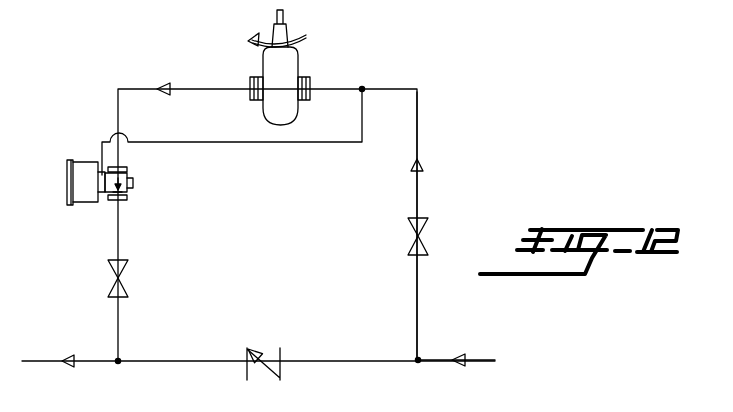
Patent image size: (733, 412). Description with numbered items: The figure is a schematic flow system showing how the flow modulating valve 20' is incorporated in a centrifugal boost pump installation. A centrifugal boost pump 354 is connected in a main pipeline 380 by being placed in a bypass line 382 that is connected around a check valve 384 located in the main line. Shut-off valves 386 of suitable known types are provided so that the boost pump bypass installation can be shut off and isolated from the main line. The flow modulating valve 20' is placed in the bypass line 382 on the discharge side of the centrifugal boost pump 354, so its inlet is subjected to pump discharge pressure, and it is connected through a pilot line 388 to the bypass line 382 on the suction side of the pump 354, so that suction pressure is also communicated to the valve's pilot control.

The flow modulating valve 20' is at (94, 163).
The centrifugal boost pump 354 is at (293, 65).
The main pipeline 380 is at (440, 361).
The bypass line 382 is at (418, 128).
The check valve 384 is at (270, 352).
The shut-off valves 386 is at (124, 285).
The pilot line 388 is at (245, 145).